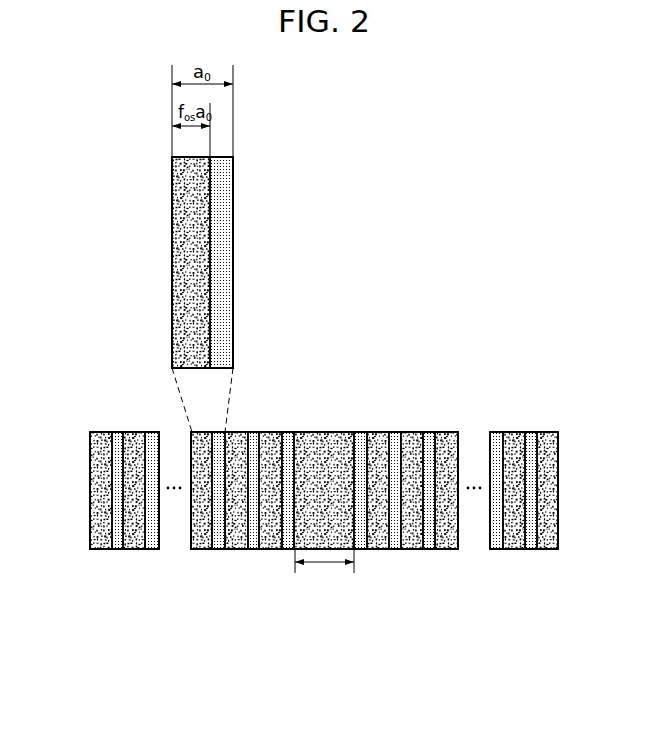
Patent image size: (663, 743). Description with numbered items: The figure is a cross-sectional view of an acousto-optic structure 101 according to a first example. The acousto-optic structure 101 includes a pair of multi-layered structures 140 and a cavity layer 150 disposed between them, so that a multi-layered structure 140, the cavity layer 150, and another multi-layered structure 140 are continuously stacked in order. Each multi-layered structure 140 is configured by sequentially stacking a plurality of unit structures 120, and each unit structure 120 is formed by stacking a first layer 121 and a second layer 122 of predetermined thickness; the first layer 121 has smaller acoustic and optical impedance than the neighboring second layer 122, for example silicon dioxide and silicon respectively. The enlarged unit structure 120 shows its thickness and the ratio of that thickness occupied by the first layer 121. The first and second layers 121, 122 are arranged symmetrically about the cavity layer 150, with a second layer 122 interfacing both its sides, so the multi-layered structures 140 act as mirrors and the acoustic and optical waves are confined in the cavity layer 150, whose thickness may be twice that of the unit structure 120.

The acousto-optic structure 101 is at (333, 392).
The unit structure 120 is at (90, 428).
The first layer 121 is at (91, 518).
The second layer 122 is at (115, 549).
The multi-layered structure 140 is at (292, 598).
The cavity layer 150 is at (295, 598).